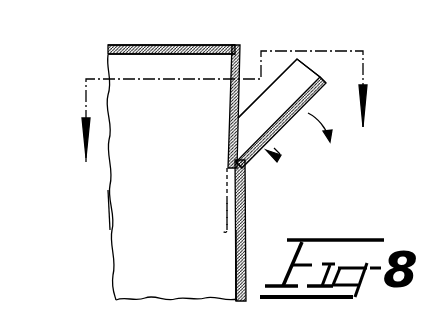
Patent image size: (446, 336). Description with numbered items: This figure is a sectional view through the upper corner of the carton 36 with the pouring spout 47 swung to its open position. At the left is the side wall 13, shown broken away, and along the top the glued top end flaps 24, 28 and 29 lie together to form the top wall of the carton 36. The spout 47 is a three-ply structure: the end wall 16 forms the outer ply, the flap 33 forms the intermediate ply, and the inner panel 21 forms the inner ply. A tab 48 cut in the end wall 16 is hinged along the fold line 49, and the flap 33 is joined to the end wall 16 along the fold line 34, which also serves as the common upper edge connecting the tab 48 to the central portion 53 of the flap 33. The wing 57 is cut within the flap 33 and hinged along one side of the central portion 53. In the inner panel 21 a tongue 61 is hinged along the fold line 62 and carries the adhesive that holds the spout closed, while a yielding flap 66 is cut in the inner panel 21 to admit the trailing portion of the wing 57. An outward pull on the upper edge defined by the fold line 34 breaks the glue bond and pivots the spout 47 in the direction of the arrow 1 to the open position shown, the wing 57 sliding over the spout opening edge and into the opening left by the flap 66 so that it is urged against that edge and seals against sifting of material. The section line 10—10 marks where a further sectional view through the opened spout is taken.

The arrow I 1 is at (314, 112).
The section line 10— 10 is at (217, 110).
The side wall 13 is at (144, 158).
The end wall 16 is at (246, 238).
The inner panel 21 is at (236, 275).
The top end flap 24 is at (146, 54).
The top end flap 28 is at (156, 45).
The top end flap 29 is at (128, 45).
The flap 33 is at (247, 257).
The fold line 34 is at (325, 83).
The carton 36 is at (104, 210).
The pouring spout 47 is at (280, 158).
The tab 48 is at (285, 123).
The fold line 49 is at (243, 170).
The central portion 53 is at (275, 149).
The wing 57 is at (226, 196).
The tongue 61 is at (287, 112).
The fold line 62 is at (226, 163).
The flap 66 is at (227, 222).